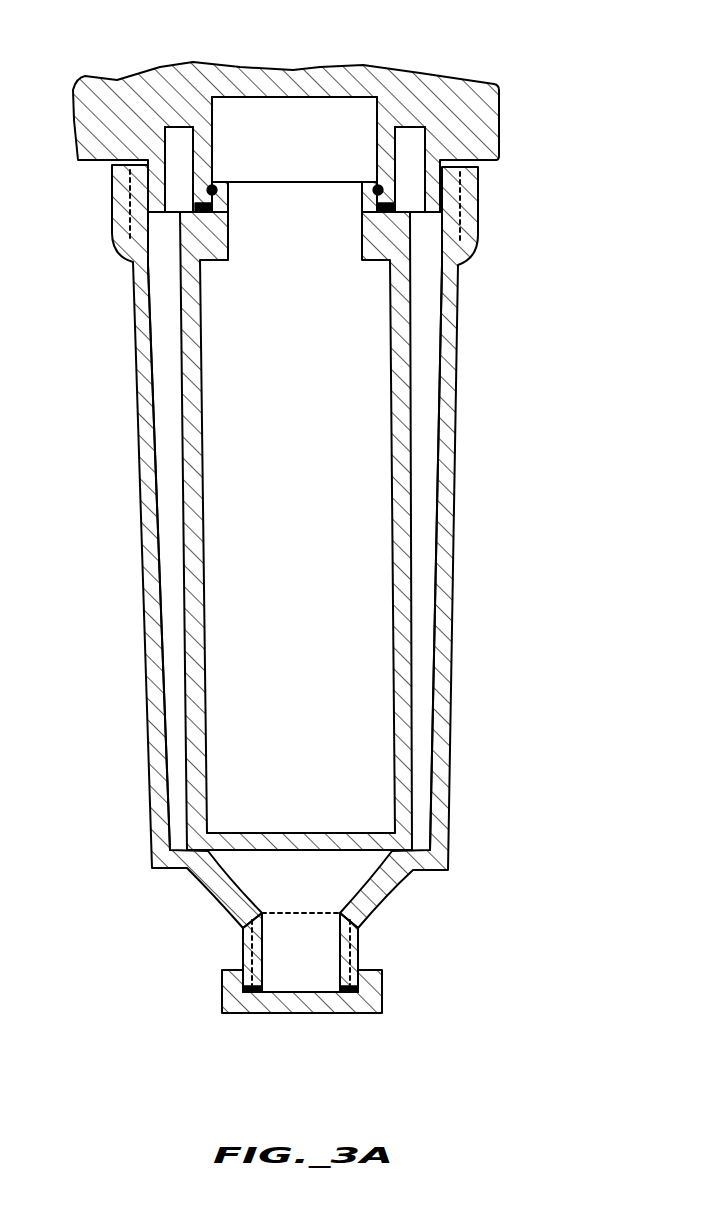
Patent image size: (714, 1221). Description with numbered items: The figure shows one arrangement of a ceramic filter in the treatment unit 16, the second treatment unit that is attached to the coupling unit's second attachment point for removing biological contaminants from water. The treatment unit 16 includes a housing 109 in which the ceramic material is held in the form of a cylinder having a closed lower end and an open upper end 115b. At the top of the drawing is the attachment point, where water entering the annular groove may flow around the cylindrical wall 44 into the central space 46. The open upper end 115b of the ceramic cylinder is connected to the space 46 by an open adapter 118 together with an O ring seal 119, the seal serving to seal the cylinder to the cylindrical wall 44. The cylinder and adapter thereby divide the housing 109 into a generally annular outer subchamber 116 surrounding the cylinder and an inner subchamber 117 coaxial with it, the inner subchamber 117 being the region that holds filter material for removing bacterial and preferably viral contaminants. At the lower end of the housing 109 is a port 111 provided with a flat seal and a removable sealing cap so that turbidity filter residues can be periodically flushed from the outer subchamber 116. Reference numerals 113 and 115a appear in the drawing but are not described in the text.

The treatment unit 16 is at (472, 446).
The wall 44 is at (408, 140).
The central space 46 is at (316, 149).
The housing 109 is at (459, 497).
The port 111 is at (362, 934).
The bottom plate 113 is at (353, 1013).
The inner canister wall 115a is at (403, 806).
The open upper end 115b is at (294, 227).
The annular outer subchamber 116 is at (173, 652).
The inner subchamber 117 is at (326, 365).
The open adapter 118 is at (393, 222).
The O ring seal 119 is at (382, 191).